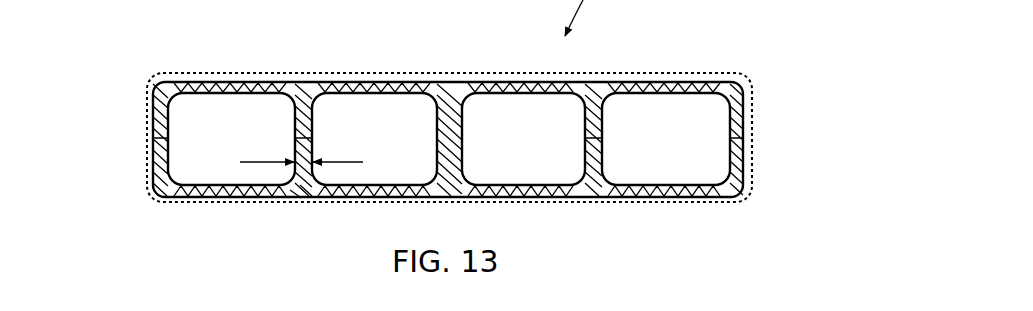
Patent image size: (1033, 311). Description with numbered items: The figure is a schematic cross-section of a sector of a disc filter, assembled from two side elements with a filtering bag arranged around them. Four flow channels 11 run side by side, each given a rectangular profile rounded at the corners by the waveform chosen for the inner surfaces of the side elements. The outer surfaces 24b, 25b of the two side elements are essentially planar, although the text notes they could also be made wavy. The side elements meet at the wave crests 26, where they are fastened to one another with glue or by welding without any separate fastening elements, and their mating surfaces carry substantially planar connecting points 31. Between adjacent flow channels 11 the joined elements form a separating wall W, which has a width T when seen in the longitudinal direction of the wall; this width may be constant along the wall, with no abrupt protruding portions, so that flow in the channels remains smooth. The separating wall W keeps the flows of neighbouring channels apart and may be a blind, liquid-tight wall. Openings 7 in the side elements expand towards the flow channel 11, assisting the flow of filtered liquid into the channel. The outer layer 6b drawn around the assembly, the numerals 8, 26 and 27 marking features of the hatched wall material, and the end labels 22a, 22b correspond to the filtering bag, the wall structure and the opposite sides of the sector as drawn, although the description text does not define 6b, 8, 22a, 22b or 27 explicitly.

The outer covering layer 6b is at (709, 213).
The opening 7 is at (200, 91).
The bottom wall 8 is at (305, 200).
The flow channel 11 is at (204, 127).
The first side section 22a is at (126, 142).
The second side section 22b is at (789, 148).
The outer surface 24b is at (441, 77).
The outer surface 25b is at (464, 197).
The wave crest 26 is at (606, 212).
The reinforcement 27 is at (661, 212).
The connecting point 31 is at (304, 137).
The separating wall W is at (612, 127).
The width T is at (301, 148).